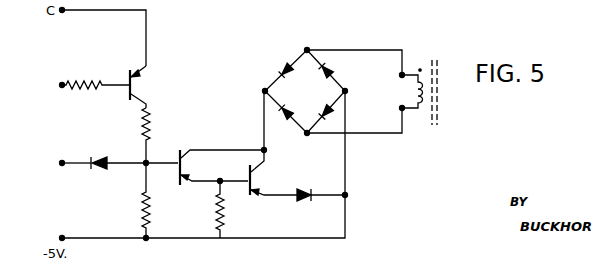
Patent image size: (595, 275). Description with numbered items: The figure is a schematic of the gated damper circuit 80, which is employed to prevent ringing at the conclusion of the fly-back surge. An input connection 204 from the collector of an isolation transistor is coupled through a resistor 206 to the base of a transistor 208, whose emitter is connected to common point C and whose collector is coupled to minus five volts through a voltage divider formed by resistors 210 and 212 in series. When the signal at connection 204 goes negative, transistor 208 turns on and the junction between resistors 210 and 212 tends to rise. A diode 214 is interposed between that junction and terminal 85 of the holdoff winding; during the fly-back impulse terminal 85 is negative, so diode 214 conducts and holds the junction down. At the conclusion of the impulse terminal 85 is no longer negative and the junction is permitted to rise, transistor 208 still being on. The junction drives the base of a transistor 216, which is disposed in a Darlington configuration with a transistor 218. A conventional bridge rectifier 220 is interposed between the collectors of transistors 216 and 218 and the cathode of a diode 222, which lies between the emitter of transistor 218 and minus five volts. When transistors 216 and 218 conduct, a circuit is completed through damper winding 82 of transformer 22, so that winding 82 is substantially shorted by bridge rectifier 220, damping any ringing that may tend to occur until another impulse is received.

The gated damper circuit 80 is at (232, 44).
The connection 204 is at (62, 85).
The resistor 206 is at (95, 76).
The transistor 208 is at (137, 81).
The resistor 210 is at (148, 125).
The resistor 212 is at (140, 211).
The terminal 85 is at (62, 163).
The diode 214 is at (98, 155).
The transistor 216 is at (177, 172).
The transistor 218 is at (248, 187).
The diode 222 is at (305, 189).
The bridge rectifier 220 is at (320, 100).
The damper winding 82 is at (415, 112).
The transformer 22 is at (432, 61).